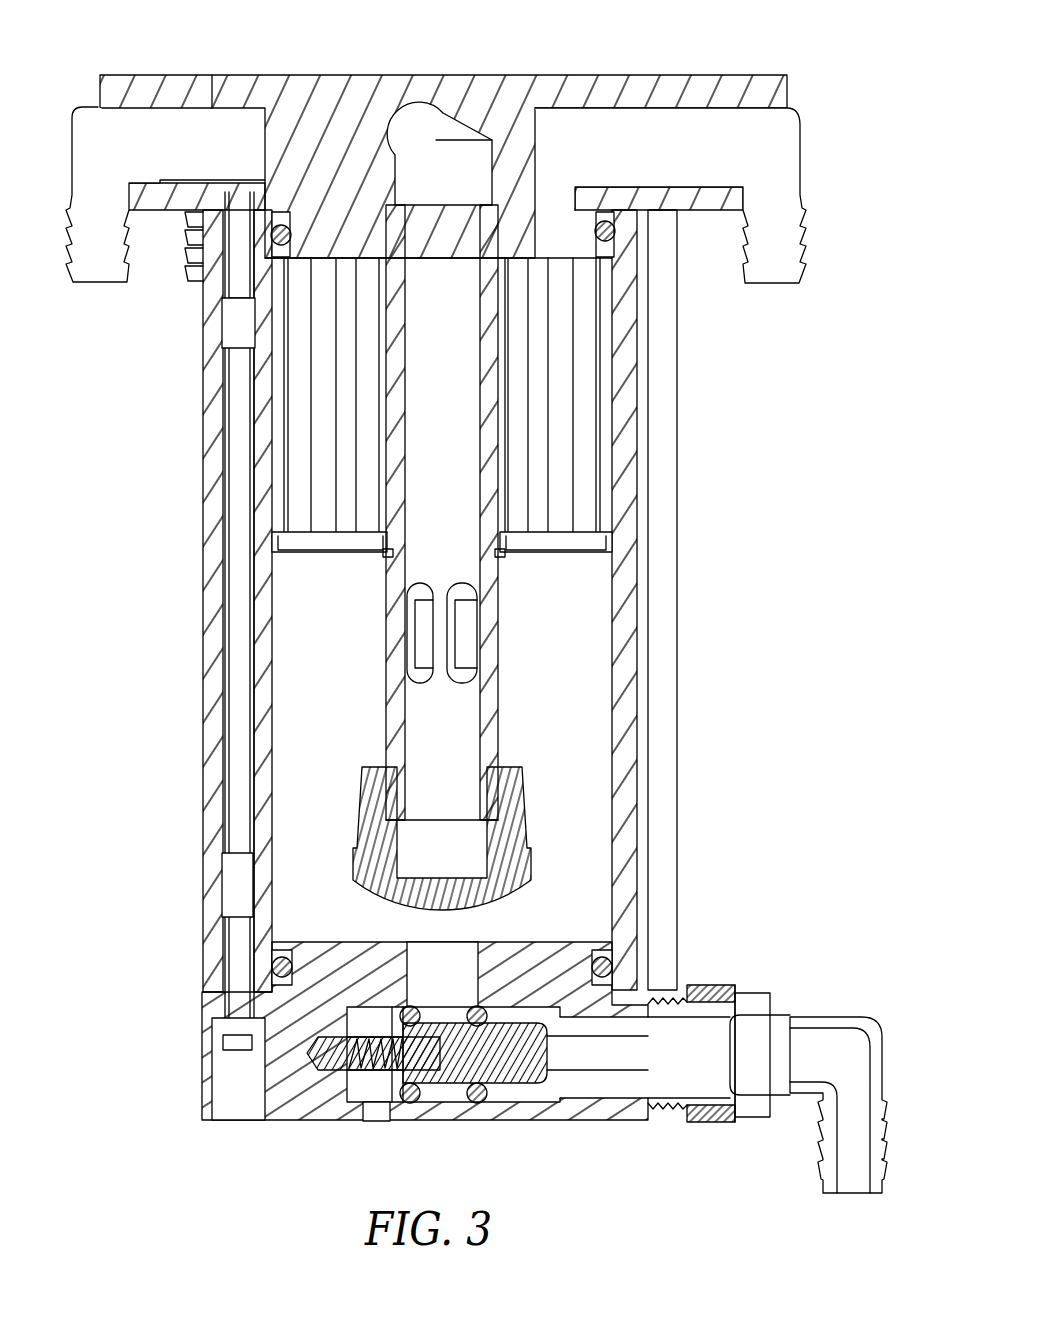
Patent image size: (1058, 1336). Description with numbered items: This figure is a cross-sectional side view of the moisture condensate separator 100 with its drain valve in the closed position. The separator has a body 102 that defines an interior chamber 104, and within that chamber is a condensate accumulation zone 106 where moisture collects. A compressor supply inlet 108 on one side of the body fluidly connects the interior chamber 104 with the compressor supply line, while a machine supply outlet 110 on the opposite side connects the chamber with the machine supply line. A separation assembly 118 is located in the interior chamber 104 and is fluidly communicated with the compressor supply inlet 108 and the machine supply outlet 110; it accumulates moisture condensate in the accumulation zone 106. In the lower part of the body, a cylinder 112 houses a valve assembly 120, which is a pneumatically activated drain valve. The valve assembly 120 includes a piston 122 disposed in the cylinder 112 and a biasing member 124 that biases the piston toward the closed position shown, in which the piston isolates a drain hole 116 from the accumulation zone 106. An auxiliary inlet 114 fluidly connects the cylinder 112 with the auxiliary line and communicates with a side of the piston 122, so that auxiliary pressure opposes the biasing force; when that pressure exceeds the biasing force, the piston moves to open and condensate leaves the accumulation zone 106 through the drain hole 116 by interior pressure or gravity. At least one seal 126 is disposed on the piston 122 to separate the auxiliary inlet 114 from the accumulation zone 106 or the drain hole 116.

The moisture condensate separator 100 is at (826, 76).
The body 102 is at (345, 95).
The interior chamber 104 is at (575, 650).
The condensate accumulation zone 106 is at (575, 878).
The compressor supply inlet 108 is at (102, 283).
The machine supply outlet 110 is at (773, 284).
The cylinder 112 is at (610, 1060).
The auxiliary inlet 114 is at (853, 1193).
The drain hole 116 is at (378, 1113).
The separation assembly 118 is at (437, 563).
The valve assembly 120 is at (457, 1087).
The piston 122 is at (560, 1053).
The biasing member 124 is at (362, 1057).
The seal 126 is at (475, 1003).